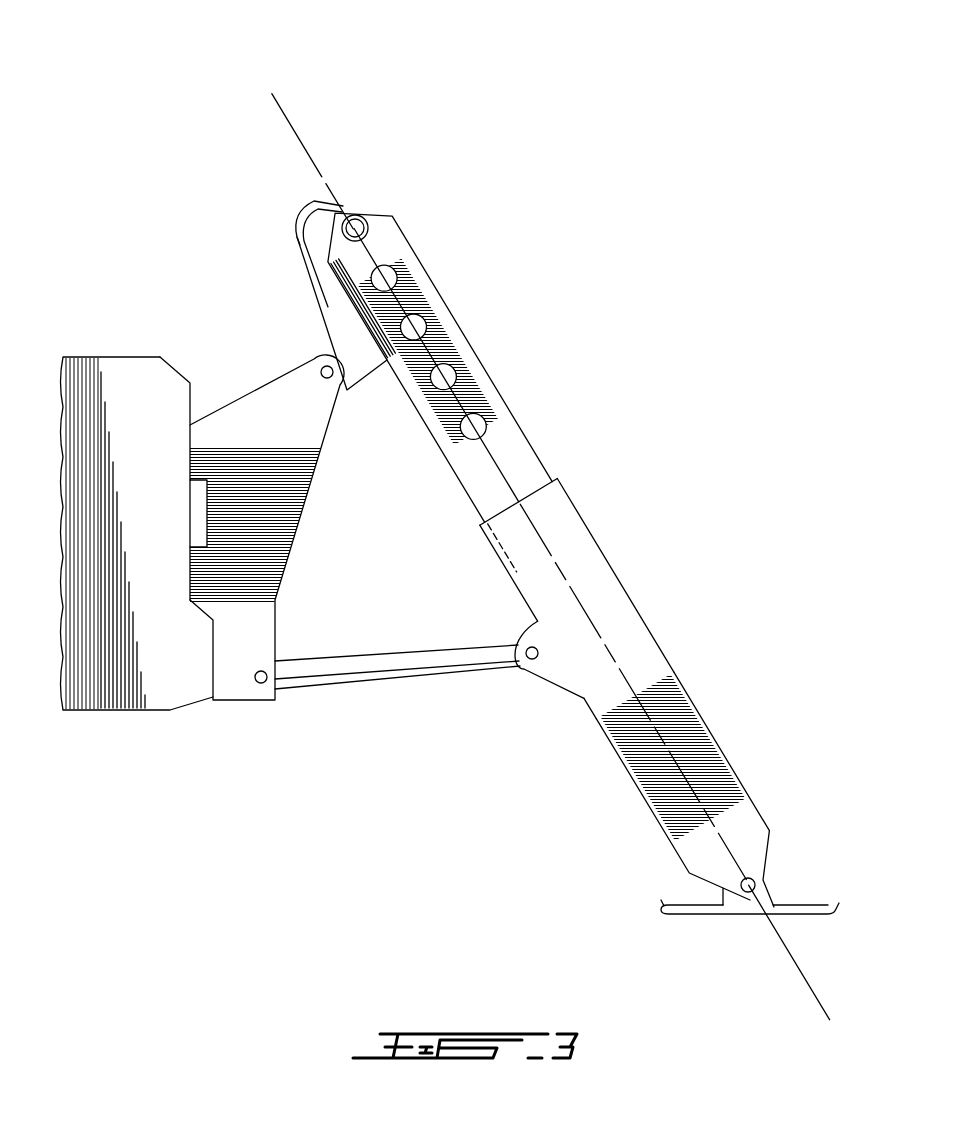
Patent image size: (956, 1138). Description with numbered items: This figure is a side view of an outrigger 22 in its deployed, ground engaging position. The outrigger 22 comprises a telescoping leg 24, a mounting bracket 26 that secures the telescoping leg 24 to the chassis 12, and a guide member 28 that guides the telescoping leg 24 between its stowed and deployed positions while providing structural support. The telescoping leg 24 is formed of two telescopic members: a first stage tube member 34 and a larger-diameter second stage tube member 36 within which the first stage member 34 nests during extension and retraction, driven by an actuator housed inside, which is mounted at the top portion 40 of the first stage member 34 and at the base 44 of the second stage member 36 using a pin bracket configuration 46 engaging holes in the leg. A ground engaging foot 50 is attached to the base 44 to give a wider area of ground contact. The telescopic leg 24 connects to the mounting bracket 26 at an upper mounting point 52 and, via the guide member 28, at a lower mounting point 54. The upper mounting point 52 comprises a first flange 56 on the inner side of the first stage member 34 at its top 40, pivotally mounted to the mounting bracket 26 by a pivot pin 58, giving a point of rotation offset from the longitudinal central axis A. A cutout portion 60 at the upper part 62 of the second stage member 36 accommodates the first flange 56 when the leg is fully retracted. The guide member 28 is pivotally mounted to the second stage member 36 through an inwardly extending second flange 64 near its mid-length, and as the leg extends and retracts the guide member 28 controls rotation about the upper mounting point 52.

The chassis 12 is at (120, 366).
The outrigger 22 is at (613, 138).
The telescoping leg 24 is at (562, 498).
The mounting bracket 26 is at (262, 418).
The guide member 28 is at (376, 692).
The first stage tube member 34 is at (478, 363).
The second stage tube member 36 is at (714, 722).
The top portion 40 is at (360, 212).
The base 44 is at (757, 886).
The pin bracket configuration 46 is at (525, 650).
The ground engaging foot 50 is at (738, 916).
The upper mounting point 52 is at (305, 347).
The lower mounting point 54 is at (262, 685).
The first flange 56 is at (328, 310).
The pivot pin 58 is at (333, 390).
The cutout portion 60 is at (490, 557).
The upper part 62 is at (480, 525).
The second flange 64 is at (548, 698).
The longitudinal central axis A is at (543, 548).